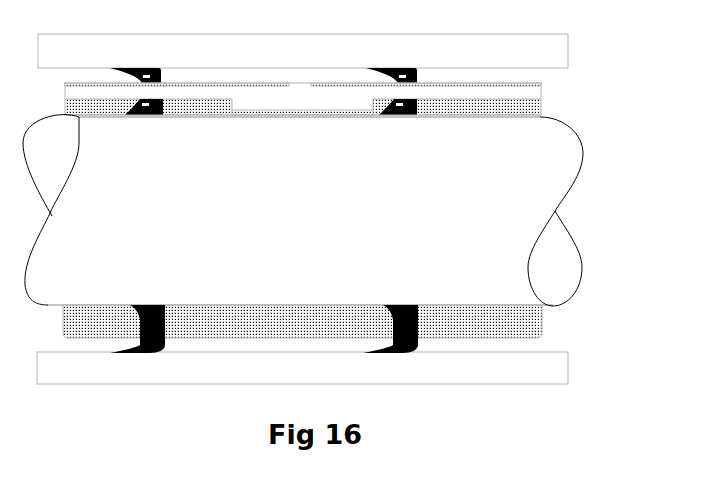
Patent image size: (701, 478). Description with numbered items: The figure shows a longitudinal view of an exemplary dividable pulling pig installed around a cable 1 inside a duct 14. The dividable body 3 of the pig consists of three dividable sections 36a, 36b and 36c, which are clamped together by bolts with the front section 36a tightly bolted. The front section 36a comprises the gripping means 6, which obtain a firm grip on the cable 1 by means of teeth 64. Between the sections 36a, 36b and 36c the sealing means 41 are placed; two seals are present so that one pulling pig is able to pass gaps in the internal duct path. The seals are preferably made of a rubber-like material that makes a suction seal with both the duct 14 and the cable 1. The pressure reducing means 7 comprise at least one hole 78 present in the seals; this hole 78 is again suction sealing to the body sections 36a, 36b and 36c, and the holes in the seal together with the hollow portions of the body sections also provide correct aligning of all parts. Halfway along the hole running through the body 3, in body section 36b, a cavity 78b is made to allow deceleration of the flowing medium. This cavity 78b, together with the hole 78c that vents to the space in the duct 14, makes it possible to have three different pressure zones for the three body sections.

The duct 14 is at (557, 53).
The hole 78 is at (546, 91).
The hole 78c is at (300, 82).
The pressure reducing means 7 is at (365, 93).
The dividable section 36c is at (93, 103).
The dividable section 36b is at (200, 103).
The front section 36a is at (455, 103).
The cavity 78b is at (315, 112).
The teeth 64 is at (512, 115).
The gripping means 6 is at (455, 123).
The dividable body 3 is at (324, 222).
The cable 1 is at (570, 283).
The sealing means 41 is at (152, 352).